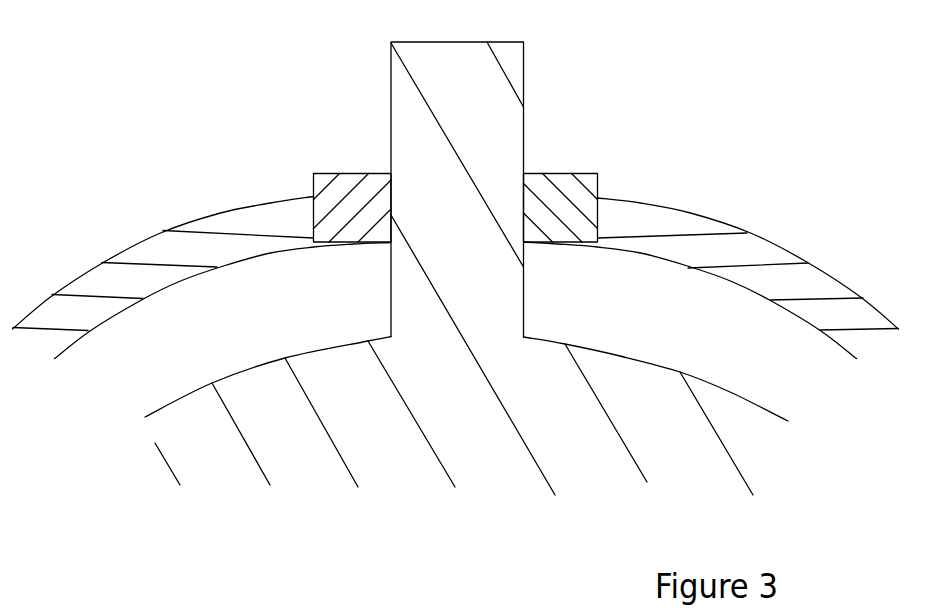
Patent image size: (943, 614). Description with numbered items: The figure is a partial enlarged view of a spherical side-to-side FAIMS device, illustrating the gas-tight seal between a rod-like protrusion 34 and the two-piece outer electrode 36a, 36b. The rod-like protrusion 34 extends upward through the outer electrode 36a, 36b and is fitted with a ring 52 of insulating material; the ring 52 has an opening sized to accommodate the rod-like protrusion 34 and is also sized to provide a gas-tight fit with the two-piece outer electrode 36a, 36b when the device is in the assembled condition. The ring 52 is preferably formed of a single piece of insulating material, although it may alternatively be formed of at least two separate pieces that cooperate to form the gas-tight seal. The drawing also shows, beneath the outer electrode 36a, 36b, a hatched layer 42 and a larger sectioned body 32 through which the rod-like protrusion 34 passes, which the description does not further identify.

The base body 32 is at (732, 437).
The rod-like protrusion 34 is at (525, 107).
The two-piece outer electrode 36a is at (162, 230).
The two-piece outer electrode 36b is at (692, 213).
The intermediate layer 42 is at (720, 322).
The ring 52 is at (600, 183).